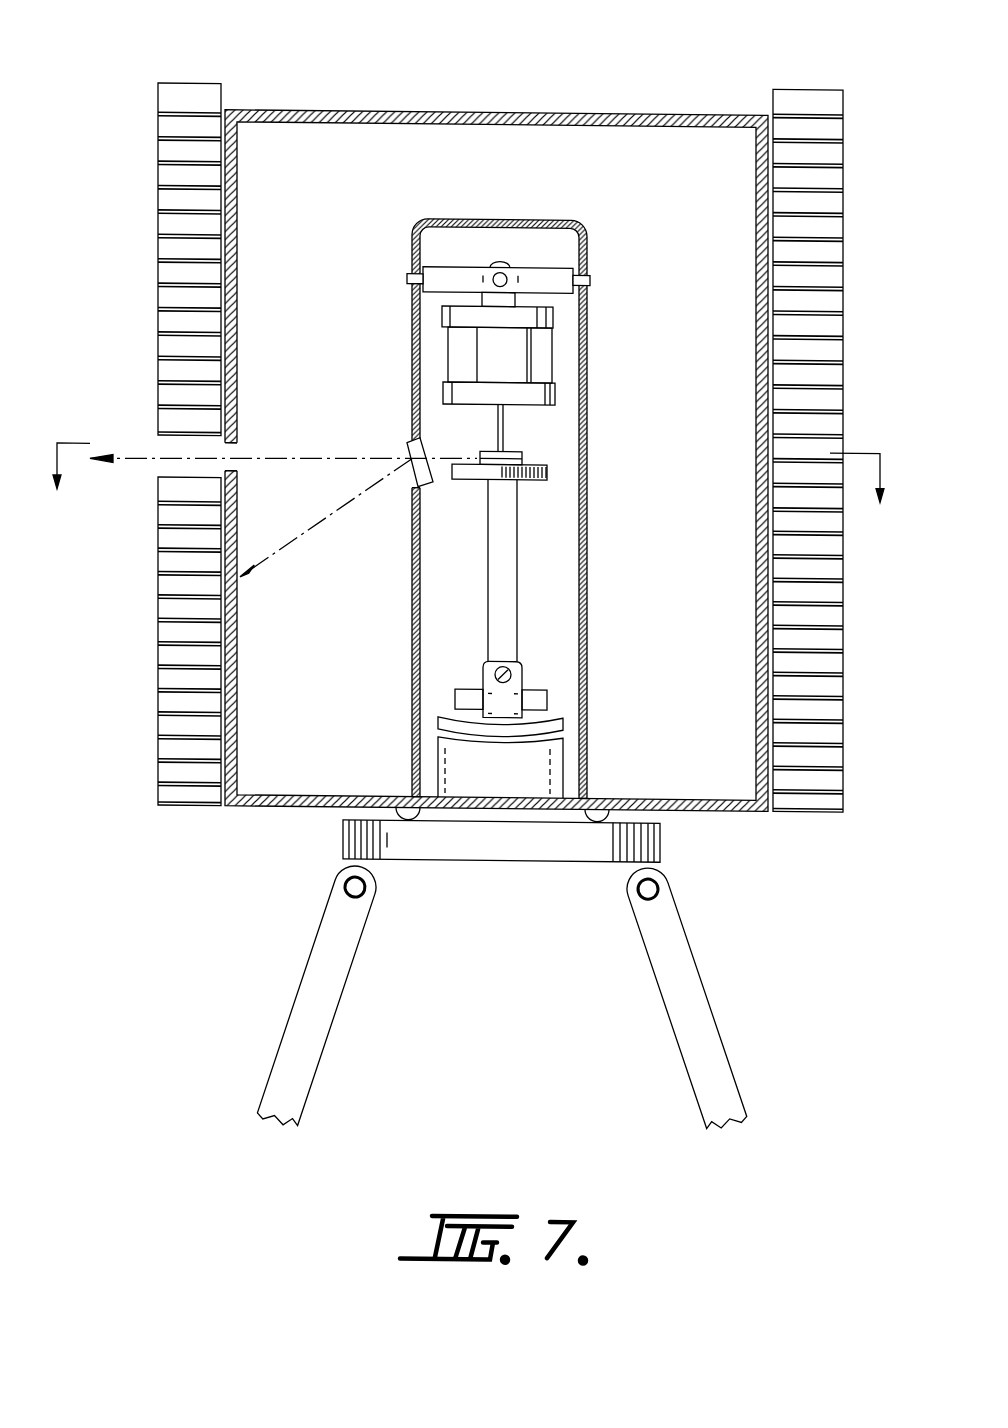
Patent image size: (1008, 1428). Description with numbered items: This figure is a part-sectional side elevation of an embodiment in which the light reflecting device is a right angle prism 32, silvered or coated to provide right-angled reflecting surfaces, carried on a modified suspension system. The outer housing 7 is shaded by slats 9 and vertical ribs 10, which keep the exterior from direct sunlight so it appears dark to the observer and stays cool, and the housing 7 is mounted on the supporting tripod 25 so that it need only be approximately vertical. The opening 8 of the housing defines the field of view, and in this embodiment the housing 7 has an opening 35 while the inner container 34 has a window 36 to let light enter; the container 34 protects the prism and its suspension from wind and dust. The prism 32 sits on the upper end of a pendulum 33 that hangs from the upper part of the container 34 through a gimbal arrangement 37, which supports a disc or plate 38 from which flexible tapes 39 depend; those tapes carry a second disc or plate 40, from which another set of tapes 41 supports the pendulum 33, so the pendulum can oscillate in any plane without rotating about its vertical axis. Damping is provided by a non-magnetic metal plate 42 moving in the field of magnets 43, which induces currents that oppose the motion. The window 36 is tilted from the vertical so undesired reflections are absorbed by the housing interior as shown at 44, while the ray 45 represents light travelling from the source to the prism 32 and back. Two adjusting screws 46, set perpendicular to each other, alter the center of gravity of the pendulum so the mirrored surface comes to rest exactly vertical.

The housing 7 is at (341, 108).
The opening 8 is at (469, 488).
The slats 9 is at (843, 185).
The vertical ribs 10 is at (168, 166).
The supporting tripod 25 is at (343, 845).
The right angle prism 32 is at (523, 450).
The pendulum 33 is at (512, 550).
The container 34 is at (587, 617).
The opening 35 is at (232, 451).
The window 36 is at (412, 474).
The gimbal arrangement 37 is at (498, 258).
The disc or plate 38 is at (553, 312).
The flexible tapes 39 is at (543, 363).
The disc or plate 40 is at (557, 385).
The tapes 41 is at (497, 430).
The non-magnetic metal plate 42 is at (438, 703).
The magnets 43 is at (533, 791).
The undesired reflections 44 is at (243, 581).
The ray 45 is at (302, 457).
The adjusting screws 46 is at (520, 664).